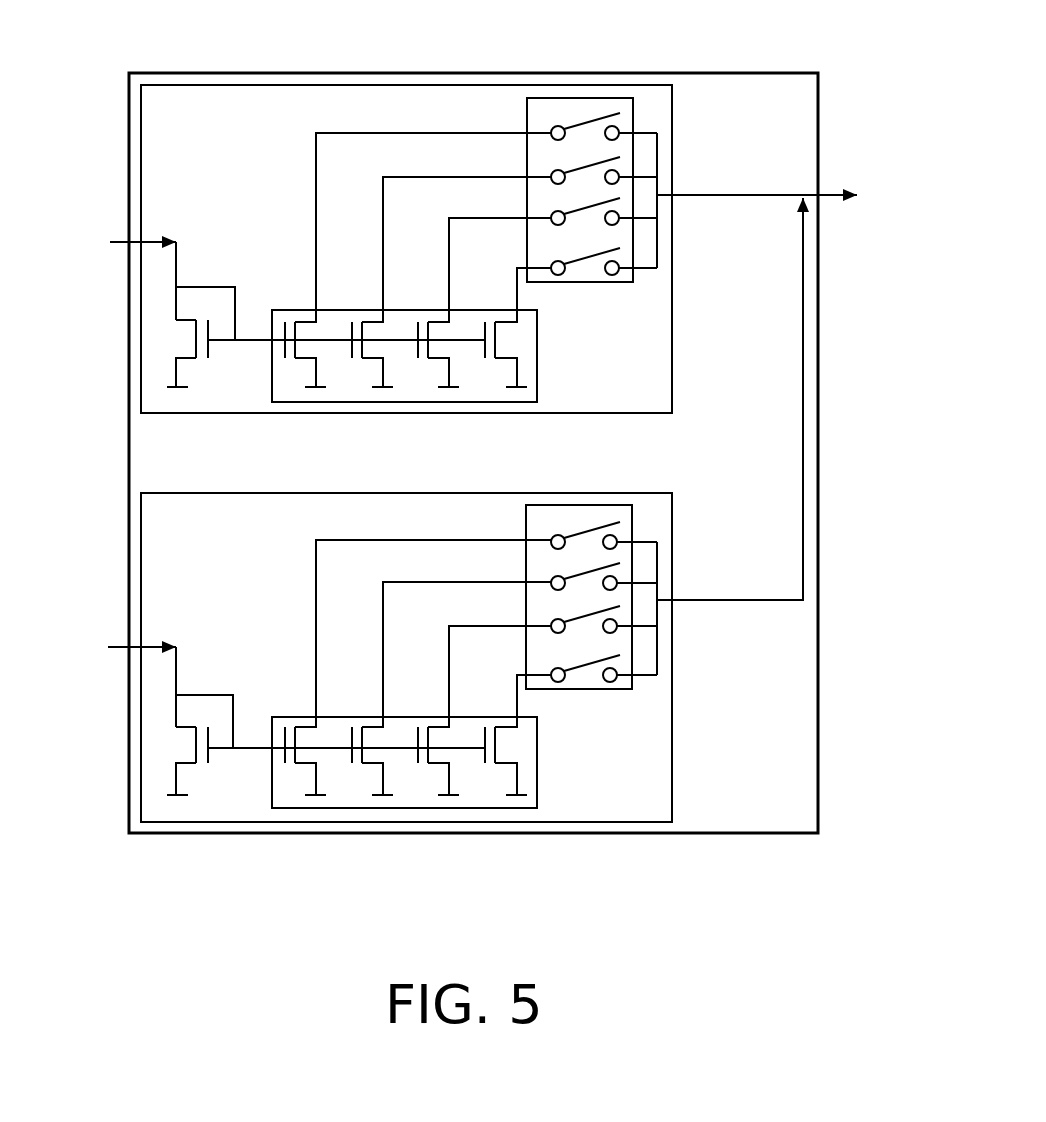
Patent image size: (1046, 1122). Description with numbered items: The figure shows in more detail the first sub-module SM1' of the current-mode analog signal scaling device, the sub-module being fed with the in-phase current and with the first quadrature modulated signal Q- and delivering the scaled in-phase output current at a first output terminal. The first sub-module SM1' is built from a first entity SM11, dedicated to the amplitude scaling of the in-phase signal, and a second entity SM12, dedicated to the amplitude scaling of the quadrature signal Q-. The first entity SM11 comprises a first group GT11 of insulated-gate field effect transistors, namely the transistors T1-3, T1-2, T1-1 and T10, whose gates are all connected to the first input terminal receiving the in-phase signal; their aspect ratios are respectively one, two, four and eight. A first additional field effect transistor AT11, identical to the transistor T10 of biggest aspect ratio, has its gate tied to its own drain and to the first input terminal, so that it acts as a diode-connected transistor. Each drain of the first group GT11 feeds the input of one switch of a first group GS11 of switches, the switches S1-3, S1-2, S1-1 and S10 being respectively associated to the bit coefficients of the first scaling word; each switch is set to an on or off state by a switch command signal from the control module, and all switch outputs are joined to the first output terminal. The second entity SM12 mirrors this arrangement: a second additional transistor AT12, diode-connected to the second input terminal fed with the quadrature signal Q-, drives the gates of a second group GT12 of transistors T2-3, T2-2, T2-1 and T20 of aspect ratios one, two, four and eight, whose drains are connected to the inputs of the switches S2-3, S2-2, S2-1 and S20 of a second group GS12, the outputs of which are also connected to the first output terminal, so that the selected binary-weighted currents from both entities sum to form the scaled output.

The first sub-module SM1' is at (419, 453).
The first entity SM11 is at (141, 133).
The second entity SM12 is at (141, 538).
The first quadrature modulated signal Q- is at (124, 645).
The first additional field effect transistor AT11 is at (178, 338).
The second additional field effect transistor AT12 is at (178, 745).
The first group of field effect transistors GT11 is at (272, 375).
The second group of field effect transistors GT12 is at (272, 757).
The transistor T1_0 T10 is at (298, 377).
The transistor T1_-1 T1-1 is at (366, 377).
The transistor T1_-2 T1-2 is at (432, 377).
The transistor T1_-3 T1-3 is at (499, 377).
The transistor T2_0 T20 is at (297, 783).
The transistor T2_-1 T2-1 is at (363, 783).
The transistor T2_-2 T2-2 is at (430, 783).
The transistor T2_-3 T2-3 is at (497, 783).
The first group of switches GS11 is at (597, 282).
The second group of switches GS12 is at (598, 689).
The switch S1_0 S10 is at (622, 123).
The switch S1_-1 S1-1 is at (620, 165).
The switch S1_-2 S1-2 is at (620, 227).
The switch S1_-3 S1-3 is at (620, 280).
The switch S2_0 S20 is at (625, 530).
The switch S2_-1 S2-1 is at (620, 573).
The switch S2_-2 S2-2 is at (620, 635).
The switch S2_-3 S2-3 is at (620, 687).